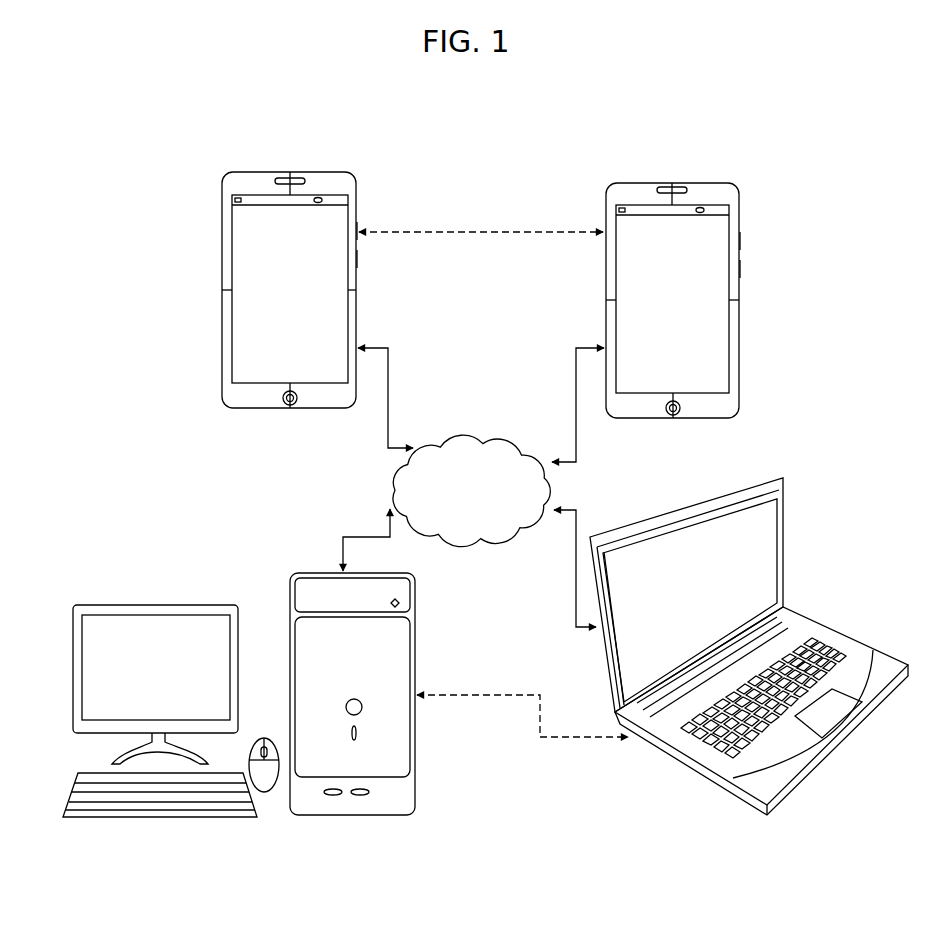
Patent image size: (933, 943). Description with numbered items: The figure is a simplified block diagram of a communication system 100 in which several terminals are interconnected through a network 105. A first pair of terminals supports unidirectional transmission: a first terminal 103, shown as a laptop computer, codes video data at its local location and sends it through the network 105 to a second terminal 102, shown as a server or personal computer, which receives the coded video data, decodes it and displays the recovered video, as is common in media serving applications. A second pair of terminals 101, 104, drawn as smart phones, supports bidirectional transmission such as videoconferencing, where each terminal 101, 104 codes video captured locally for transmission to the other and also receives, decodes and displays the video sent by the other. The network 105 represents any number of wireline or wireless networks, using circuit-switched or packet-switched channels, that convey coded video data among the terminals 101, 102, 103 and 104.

The communication system 100 is at (92, 146).
The terminal 101 is at (222, 280).
The second terminal 102 is at (415, 781).
The first terminal 103 is at (600, 652).
The terminal 104 is at (606, 272).
The network 105 is at (475, 440).